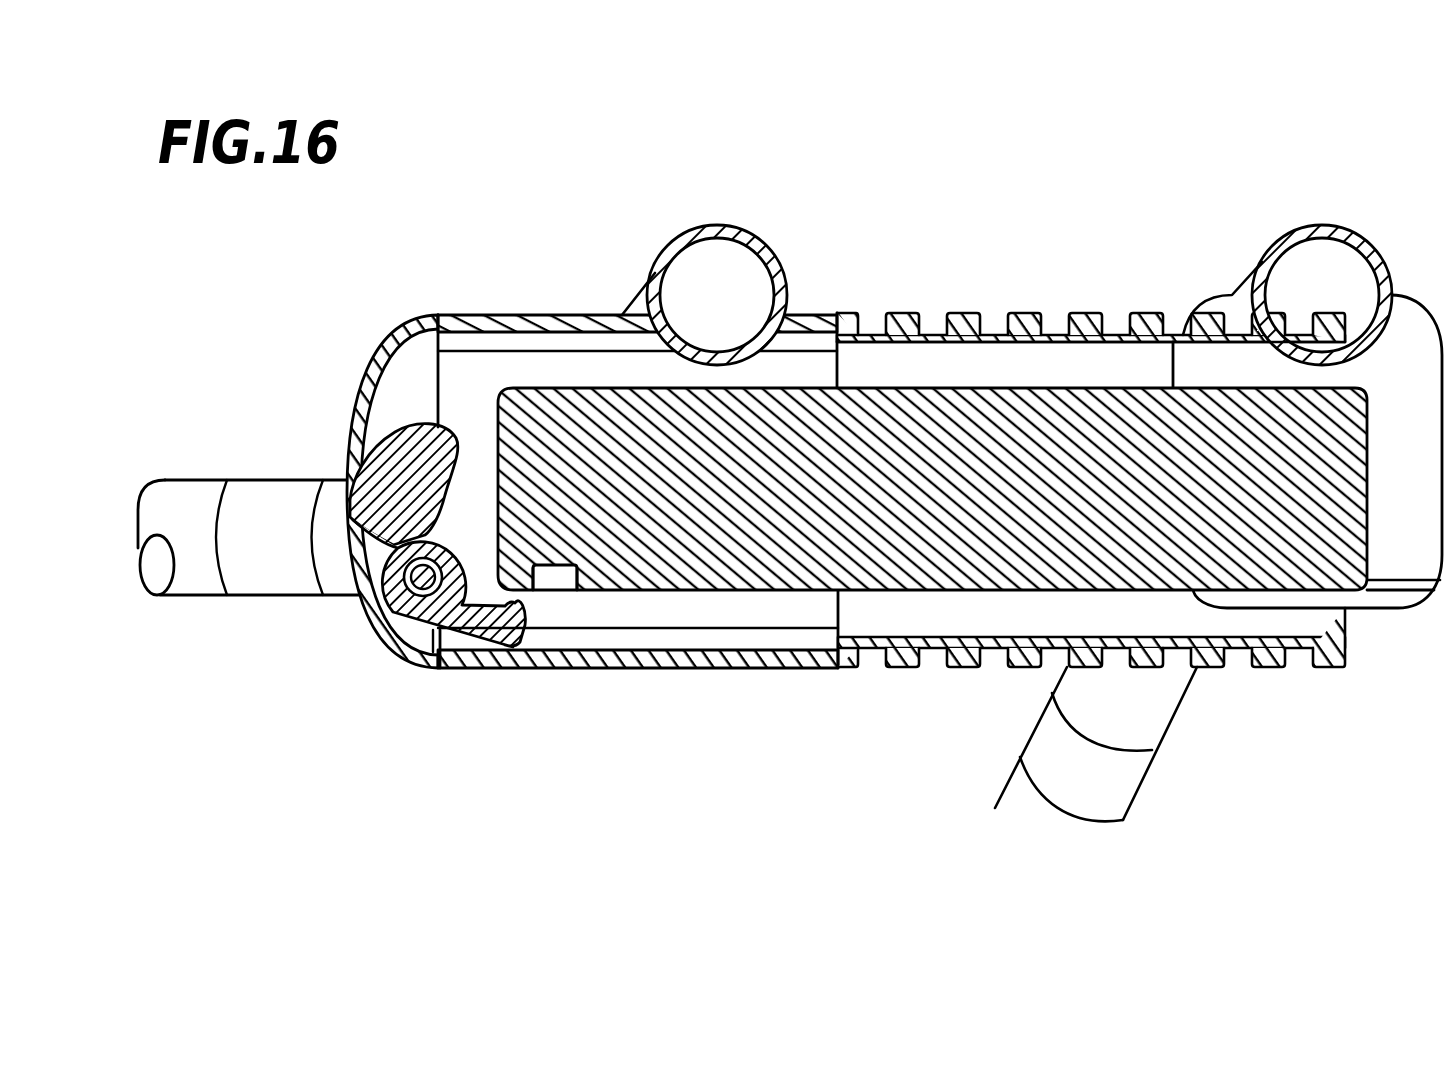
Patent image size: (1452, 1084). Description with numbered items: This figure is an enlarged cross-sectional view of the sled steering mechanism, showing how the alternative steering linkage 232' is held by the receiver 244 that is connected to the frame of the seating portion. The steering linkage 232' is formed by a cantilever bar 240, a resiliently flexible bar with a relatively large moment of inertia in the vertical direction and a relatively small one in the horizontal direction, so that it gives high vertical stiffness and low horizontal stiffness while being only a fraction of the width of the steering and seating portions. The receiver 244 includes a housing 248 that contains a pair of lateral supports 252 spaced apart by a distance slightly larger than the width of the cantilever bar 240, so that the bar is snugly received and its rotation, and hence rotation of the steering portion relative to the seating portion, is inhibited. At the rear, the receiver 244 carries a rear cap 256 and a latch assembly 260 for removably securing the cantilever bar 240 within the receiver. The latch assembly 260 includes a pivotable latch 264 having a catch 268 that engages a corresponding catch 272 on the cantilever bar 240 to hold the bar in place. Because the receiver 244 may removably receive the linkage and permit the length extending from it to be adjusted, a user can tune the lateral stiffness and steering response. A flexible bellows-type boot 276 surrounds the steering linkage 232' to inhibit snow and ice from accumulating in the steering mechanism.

The steering linkage 232' is at (1091, 201).
The cantilever bar 240 is at (1190, 543).
The receiver 244 is at (558, 243).
The housing 248 is at (477, 313).
The lateral supports 252 is at (840, 357).
The rear cap 256 is at (353, 413).
The latch assembly 260 is at (305, 682).
The pivotable latch 264 is at (372, 485).
The catch 268 is at (445, 648).
The catch 272 is at (550, 586).
The boot 276 is at (1008, 312).